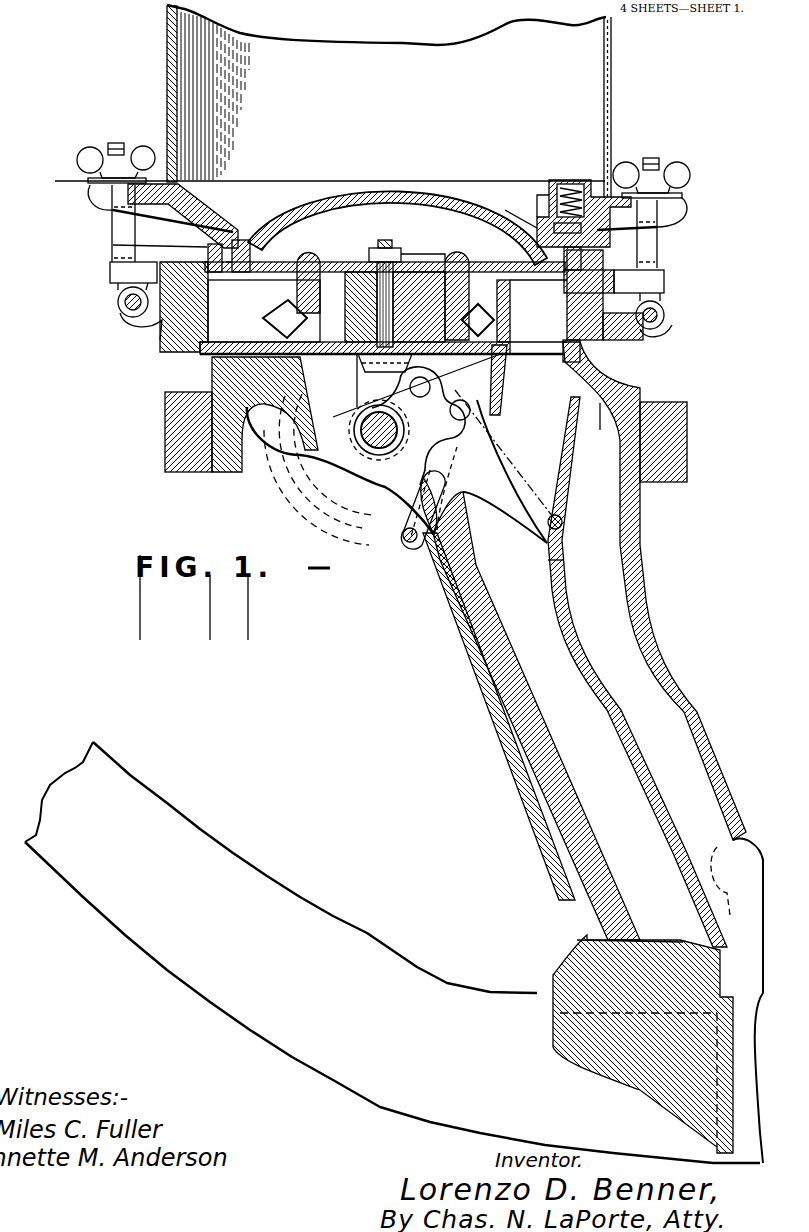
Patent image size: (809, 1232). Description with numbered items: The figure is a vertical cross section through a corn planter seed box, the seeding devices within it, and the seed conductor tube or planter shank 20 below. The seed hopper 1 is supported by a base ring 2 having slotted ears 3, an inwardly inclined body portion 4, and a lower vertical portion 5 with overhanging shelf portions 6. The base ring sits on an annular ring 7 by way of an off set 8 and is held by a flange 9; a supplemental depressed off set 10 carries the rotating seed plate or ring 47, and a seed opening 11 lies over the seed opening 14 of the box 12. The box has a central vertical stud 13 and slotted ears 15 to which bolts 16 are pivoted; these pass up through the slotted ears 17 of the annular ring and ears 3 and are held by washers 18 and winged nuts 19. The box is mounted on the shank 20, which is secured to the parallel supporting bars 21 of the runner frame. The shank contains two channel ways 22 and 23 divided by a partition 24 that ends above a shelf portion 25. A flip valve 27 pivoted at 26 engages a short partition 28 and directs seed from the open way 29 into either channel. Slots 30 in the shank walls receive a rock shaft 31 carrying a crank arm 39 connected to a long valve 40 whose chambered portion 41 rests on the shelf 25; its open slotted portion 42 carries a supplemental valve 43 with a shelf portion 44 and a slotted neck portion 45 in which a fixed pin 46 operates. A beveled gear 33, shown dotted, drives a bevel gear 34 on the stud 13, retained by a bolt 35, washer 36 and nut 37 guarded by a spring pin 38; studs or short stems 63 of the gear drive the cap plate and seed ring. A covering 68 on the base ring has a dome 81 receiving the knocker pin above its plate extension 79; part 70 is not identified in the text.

The seed hopper 1 is at (333, 101).
The base ring 2 is at (330, 186).
The slotted ears 3 is at (100, 193).
The inwardly inclined body portion 4 is at (185, 203).
The lower vertical portion 5 is at (208, 241).
The overhanging shelf portions 6 is at (238, 247).
The annular ring 7 is at (157, 322).
The off set 8 is at (186, 316).
The flange 9 is at (148, 246).
The supplemental depressed off set 10 is at (264, 311).
The seed opening 11 is at (560, 272).
The box 12 is at (207, 352).
The central vertical stud 13 is at (342, 382).
The seed opening 14 is at (563, 358).
The slotted ears 15 is at (122, 313).
The bolts 16 is at (122, 203).
The slotted ears 17 is at (110, 276).
The washers 18 is at (710, 192).
The winged nuts 19 is at (87, 156).
The seed conductor tube or planter shank 20 is at (498, 738).
The parallel supporting bars 21 is at (170, 462).
The channel way 22 is at (598, 638).
The channel way 23 is at (654, 591).
The partition 24 is at (577, 641).
The shelf portion 25 is at (713, 1020).
The pivot 26 is at (562, 530).
The flip valve 27 is at (595, 432).
The short partition 28 is at (503, 372).
The open way 29 is at (481, 465).
The slots 30 is at (360, 438).
The rock shaft 31 is at (336, 487).
The beveled gear 33 is at (345, 545).
The bevel gear 34 is at (273, 313).
The bolt 35 is at (420, 267).
The washer 36 is at (343, 280).
The nut 37 is at (384, 262).
The spring pin 38 is at (384, 380).
The crank arm 39 is at (538, 335).
The valve 40 is at (483, 650).
The chambered portion 41 is at (614, 929).
The open slotted portion 42 is at (434, 598).
The supplemental valve 43 is at (500, 505).
The shelf portion 44 is at (556, 507).
The slotted neck portion 45 is at (420, 465).
The pin 46 is at (417, 553).
The seed plate or ring 47 is at (246, 262).
The studs or short stems 63 is at (308, 262).
The covering 68 is at (560, 215).
The plate 70 is at (545, 232).
The plate extension 79 is at (598, 270).
The dome 81 is at (563, 187).